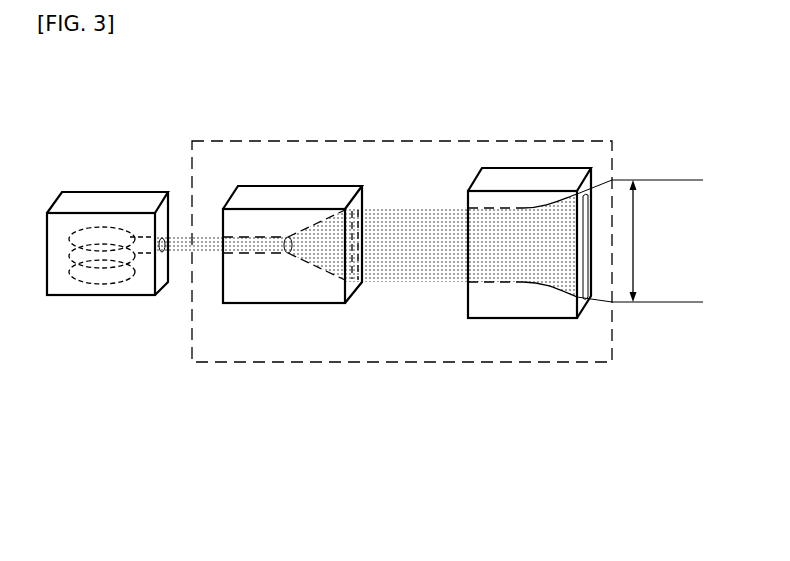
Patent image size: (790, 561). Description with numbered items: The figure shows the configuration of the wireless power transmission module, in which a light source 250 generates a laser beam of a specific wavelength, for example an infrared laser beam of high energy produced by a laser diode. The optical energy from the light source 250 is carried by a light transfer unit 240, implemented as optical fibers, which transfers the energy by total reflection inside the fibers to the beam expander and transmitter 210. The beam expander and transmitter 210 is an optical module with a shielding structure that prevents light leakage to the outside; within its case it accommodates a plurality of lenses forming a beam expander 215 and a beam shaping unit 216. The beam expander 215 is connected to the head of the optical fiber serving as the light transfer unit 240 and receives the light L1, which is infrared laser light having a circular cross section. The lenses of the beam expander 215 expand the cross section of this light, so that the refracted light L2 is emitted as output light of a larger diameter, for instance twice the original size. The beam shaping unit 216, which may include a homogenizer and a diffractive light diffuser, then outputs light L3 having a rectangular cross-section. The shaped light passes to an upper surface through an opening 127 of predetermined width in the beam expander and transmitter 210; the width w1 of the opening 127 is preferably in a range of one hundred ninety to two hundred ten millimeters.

The opening 127 is at (557, 230).
The beam expander and transmitter 210 is at (585, 362).
The beam expander 215 is at (285, 303).
The beam shaping unit 216 is at (515, 318).
The light transfer unit 240 is at (185, 253).
The light source 250 is at (95, 296).
The light L1 is at (250, 245).
The light L2 is at (387, 240).
The light L3 is at (607, 285).
The width of the opening w1 is at (657, 241).